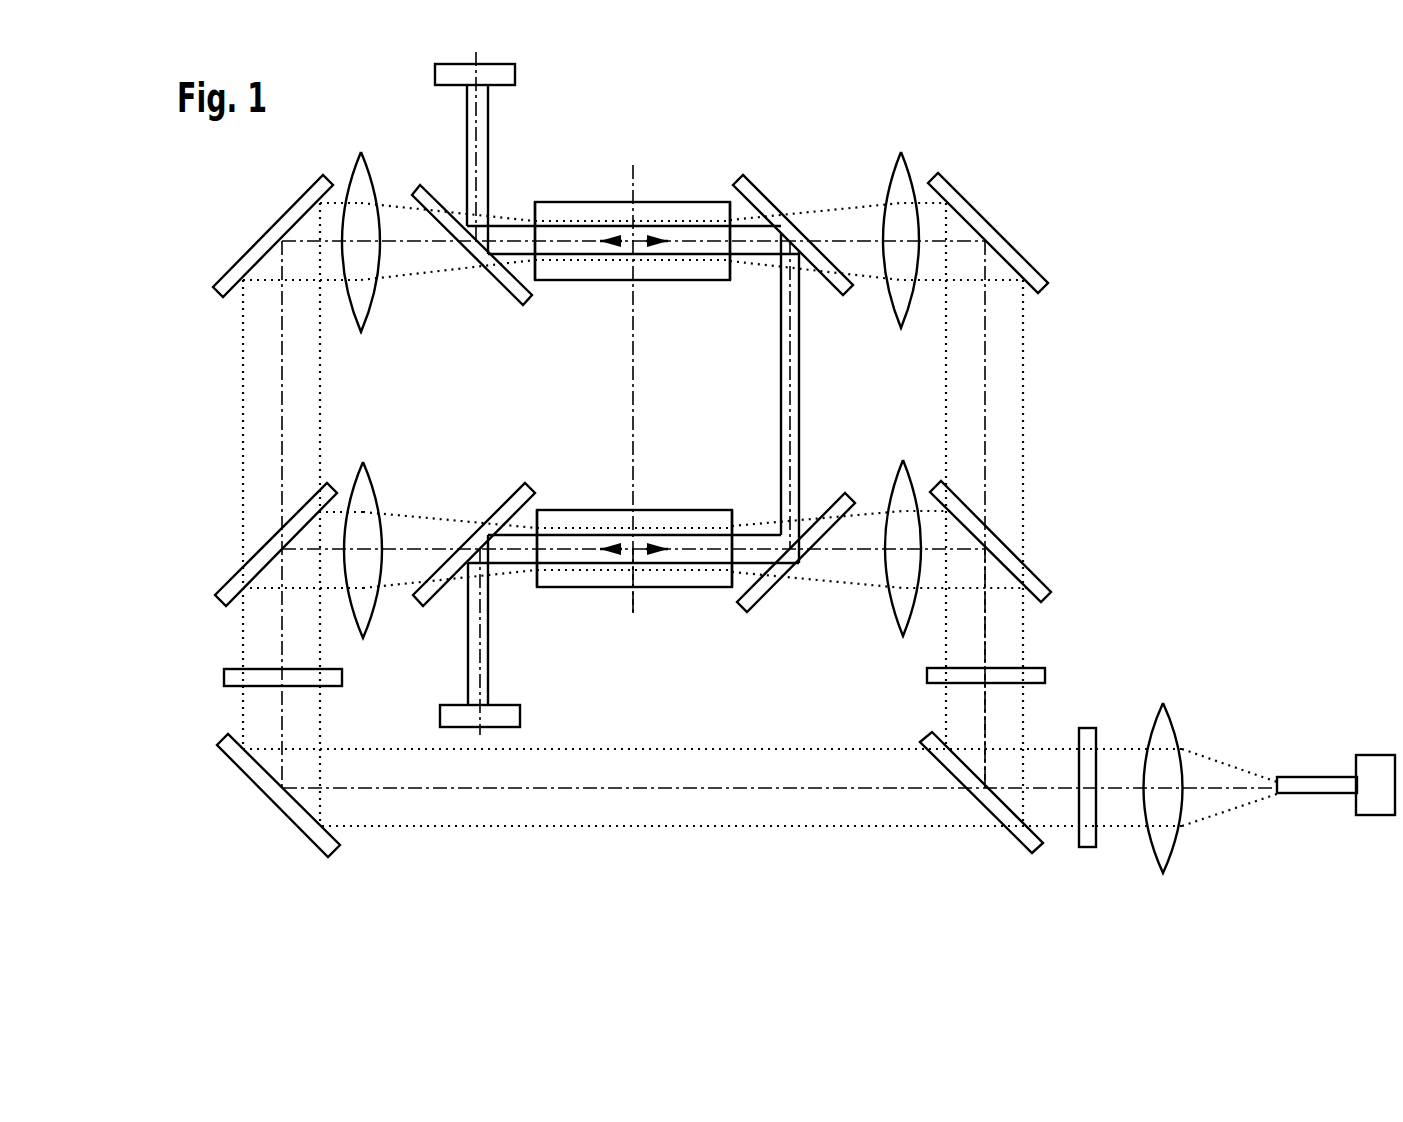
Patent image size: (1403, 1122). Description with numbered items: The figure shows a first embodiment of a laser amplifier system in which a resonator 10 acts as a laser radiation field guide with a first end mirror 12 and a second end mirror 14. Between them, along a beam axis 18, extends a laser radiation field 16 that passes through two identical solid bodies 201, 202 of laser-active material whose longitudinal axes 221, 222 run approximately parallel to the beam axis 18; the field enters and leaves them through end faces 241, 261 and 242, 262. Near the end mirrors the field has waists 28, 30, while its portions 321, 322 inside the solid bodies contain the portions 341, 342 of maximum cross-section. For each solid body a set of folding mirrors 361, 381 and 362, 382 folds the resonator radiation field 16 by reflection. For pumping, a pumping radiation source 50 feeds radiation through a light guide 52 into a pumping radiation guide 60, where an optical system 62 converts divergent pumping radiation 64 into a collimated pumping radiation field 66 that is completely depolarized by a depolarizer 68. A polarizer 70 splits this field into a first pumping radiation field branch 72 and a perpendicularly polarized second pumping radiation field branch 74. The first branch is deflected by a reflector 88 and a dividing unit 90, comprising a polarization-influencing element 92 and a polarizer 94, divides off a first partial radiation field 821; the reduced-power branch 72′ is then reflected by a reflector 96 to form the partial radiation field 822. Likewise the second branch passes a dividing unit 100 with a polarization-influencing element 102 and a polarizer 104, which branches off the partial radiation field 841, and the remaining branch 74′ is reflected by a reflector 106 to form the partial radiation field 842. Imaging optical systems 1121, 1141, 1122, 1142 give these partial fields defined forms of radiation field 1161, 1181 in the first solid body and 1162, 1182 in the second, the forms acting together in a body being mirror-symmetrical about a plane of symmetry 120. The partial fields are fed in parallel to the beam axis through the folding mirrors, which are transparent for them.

The resonator 10 is at (820, 403).
The first end mirror 12 is at (520, 714).
The second end mirror 14 is at (516, 76).
The laser radiation field 16 is at (799, 389).
The beam axis 18 is at (790, 423).
The first solid body 201 is at (692, 583).
The second solid body 202 is at (683, 270).
The longitudinal axis of first solid body 221 is at (623, 553).
The longitudinal axis of second solid body 222 is at (620, 245).
The end face of first solid body 241 is at (537, 578).
The end face of second solid body 242 is at (533, 217).
The end face of first solid body 261 is at (737, 577).
The end face of second solid body 262 is at (738, 212).
The waist 28 is at (470, 698).
The waist 30 is at (466, 90).
The portion of resonator radiation field 321 is at (672, 528).
The portion of resonator radiation field 322 is at (697, 257).
The portion with maximum cross-section 341 is at (648, 570).
The portion with maximum cross-section 342 is at (648, 220).
The folding mirror 361 is at (497, 507).
The folding mirror 362 is at (770, 208).
The folding mirror 381 is at (763, 590).
The folding mirror 382 is at (503, 287).
The pumping radiation source 50 is at (1378, 815).
The light guide 52 is at (1305, 793).
The pumping radiation guide 60 is at (872, 847).
The optical system 62 is at (1163, 845).
The divergent pumping radiation 64 is at (1198, 772).
The collimated pumping radiation field 66 is at (1112, 763).
The depolarizer 68 is at (1087, 730).
The polarizer 70 is at (1017, 832).
The first pumping radiation field branch 72 is at (803, 830).
The first pumping radiation field branch 72′ is at (253, 522).
The second pumping radiation field branch 74 is at (1000, 717).
The second pumping radiation field branch 74′ is at (1005, 480).
The first partial radiation field 821 is at (418, 533).
The first partial radiation field 822 is at (417, 258).
The second partial radiation field 841 is at (858, 530).
The second partial radiation field 842 is at (858, 225).
The reflector 88 is at (298, 817).
The dividing unit 90 is at (212, 633).
The polarization-influencing element 92 is at (223, 676).
The polarizer 94 is at (223, 590).
The reflector 96 is at (280, 233).
The dividing unit 100 is at (1080, 592).
The polarization-influencing element 102 is at (1030, 675).
The polarizer 104 is at (1002, 555).
The reflector 106 is at (1015, 257).
The imaging optical system 1121 is at (367, 610).
The imaging optical system 1122 is at (366, 300).
The imaging optical system 1141 is at (898, 603).
The imaging optical system 1142 is at (897, 295).
The form of radiation field 1161 is at (550, 528).
The form of radiation field 1162 is at (567, 220).
The form of radiation field 1181 is at (717, 525).
The form of radiation field 1182 is at (717, 220).
The plane of symmetry 120 is at (633, 410).